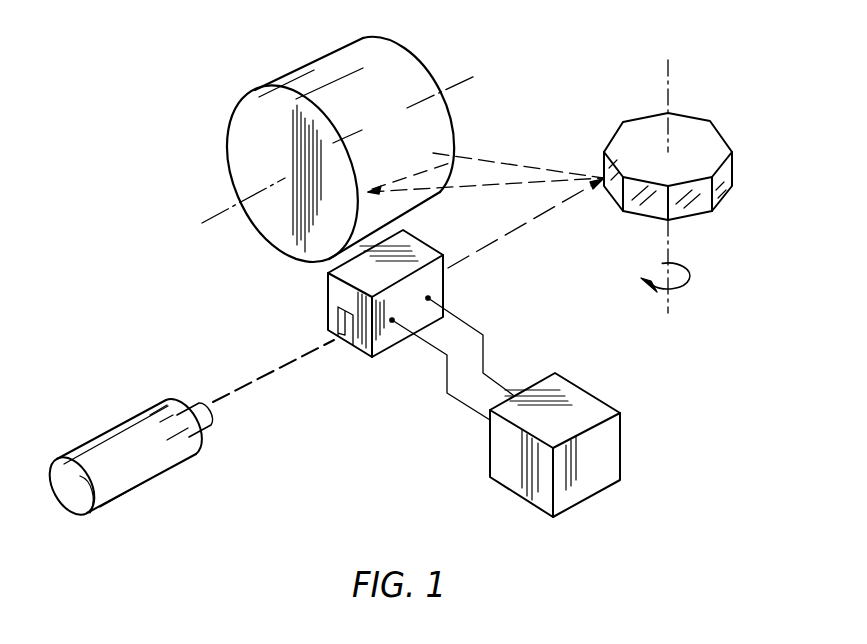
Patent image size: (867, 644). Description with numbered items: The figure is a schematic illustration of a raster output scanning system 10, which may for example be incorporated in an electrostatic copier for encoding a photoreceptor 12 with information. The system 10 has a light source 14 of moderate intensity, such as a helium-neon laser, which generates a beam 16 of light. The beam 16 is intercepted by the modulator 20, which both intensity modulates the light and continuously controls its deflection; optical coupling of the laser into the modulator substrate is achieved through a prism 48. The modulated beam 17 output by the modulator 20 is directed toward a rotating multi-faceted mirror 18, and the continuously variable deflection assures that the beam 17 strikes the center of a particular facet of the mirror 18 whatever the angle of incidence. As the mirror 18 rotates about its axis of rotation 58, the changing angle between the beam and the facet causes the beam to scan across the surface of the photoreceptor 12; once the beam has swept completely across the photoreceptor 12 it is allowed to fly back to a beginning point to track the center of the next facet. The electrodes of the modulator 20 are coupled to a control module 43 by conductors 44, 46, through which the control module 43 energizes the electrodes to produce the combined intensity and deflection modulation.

The raster output scanning system 10 is at (329, 422).
The photoreceptor 12 is at (400, 58).
The light source 14 is at (112, 433).
The beam 16 is at (272, 372).
The modulated beam 17 is at (515, 229).
The multi-faceted mirror 18 is at (706, 136).
The modulator 20 is at (328, 272).
The control module 43 is at (618, 430).
The conductor 44 is at (446, 377).
The conductor 46 is at (485, 352).
The prism 48 is at (352, 347).
The mirror axis of rotation 58 is at (668, 88).